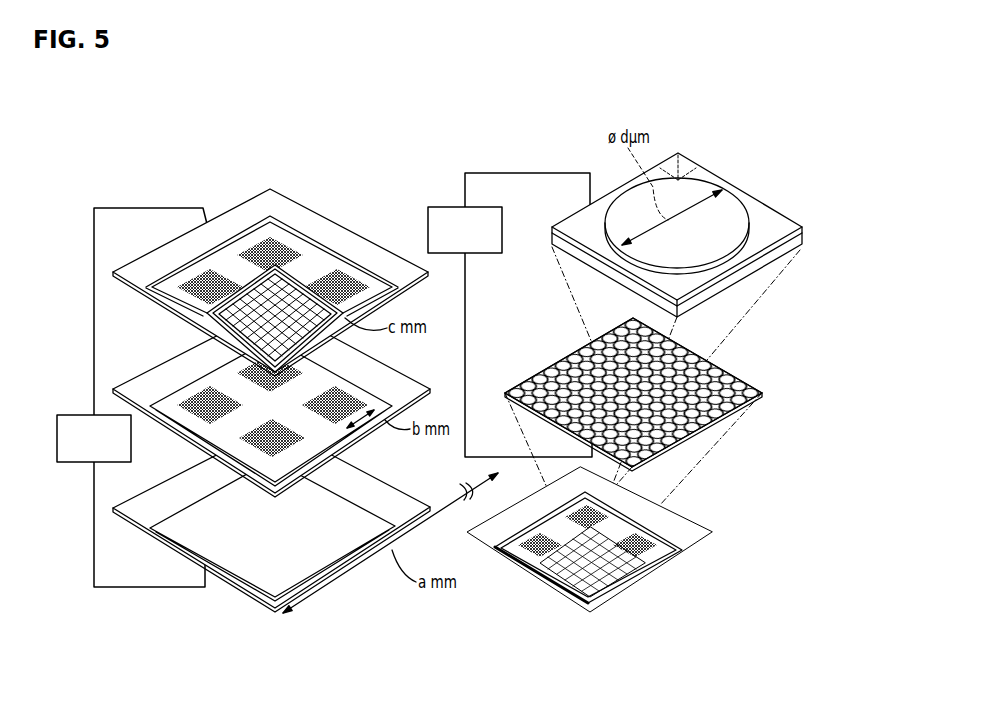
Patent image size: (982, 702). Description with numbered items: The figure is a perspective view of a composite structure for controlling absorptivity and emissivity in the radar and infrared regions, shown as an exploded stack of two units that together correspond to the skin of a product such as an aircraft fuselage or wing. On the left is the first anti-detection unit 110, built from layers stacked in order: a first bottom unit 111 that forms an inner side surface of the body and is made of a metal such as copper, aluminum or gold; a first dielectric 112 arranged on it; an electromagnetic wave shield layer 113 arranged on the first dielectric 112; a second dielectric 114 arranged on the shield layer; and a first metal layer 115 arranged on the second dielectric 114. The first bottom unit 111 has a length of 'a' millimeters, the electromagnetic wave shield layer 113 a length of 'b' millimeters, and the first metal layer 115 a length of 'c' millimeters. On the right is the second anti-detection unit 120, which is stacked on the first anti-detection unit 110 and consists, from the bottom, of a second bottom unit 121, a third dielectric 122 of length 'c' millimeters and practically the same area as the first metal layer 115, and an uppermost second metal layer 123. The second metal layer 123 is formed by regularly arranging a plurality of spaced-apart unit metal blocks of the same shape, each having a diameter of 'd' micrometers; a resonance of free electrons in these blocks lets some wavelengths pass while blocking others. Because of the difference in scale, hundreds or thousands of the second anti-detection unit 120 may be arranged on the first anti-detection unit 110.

The first anti-detection unit 110 is at (132, 397).
The first bottom unit 111 is at (403, 509).
The first dielectric 112 is at (318, 590).
The electromagnetic wave shield layer 113 is at (310, 442).
The second dielectric 114 is at (190, 322).
The first metal layer 115 is at (212, 337).
The second anti-detection unit 120 is at (510, 315).
The second bottom unit 121 is at (787, 255).
The third dielectric 122 is at (804, 233).
The second metal layer 123 is at (728, 208).